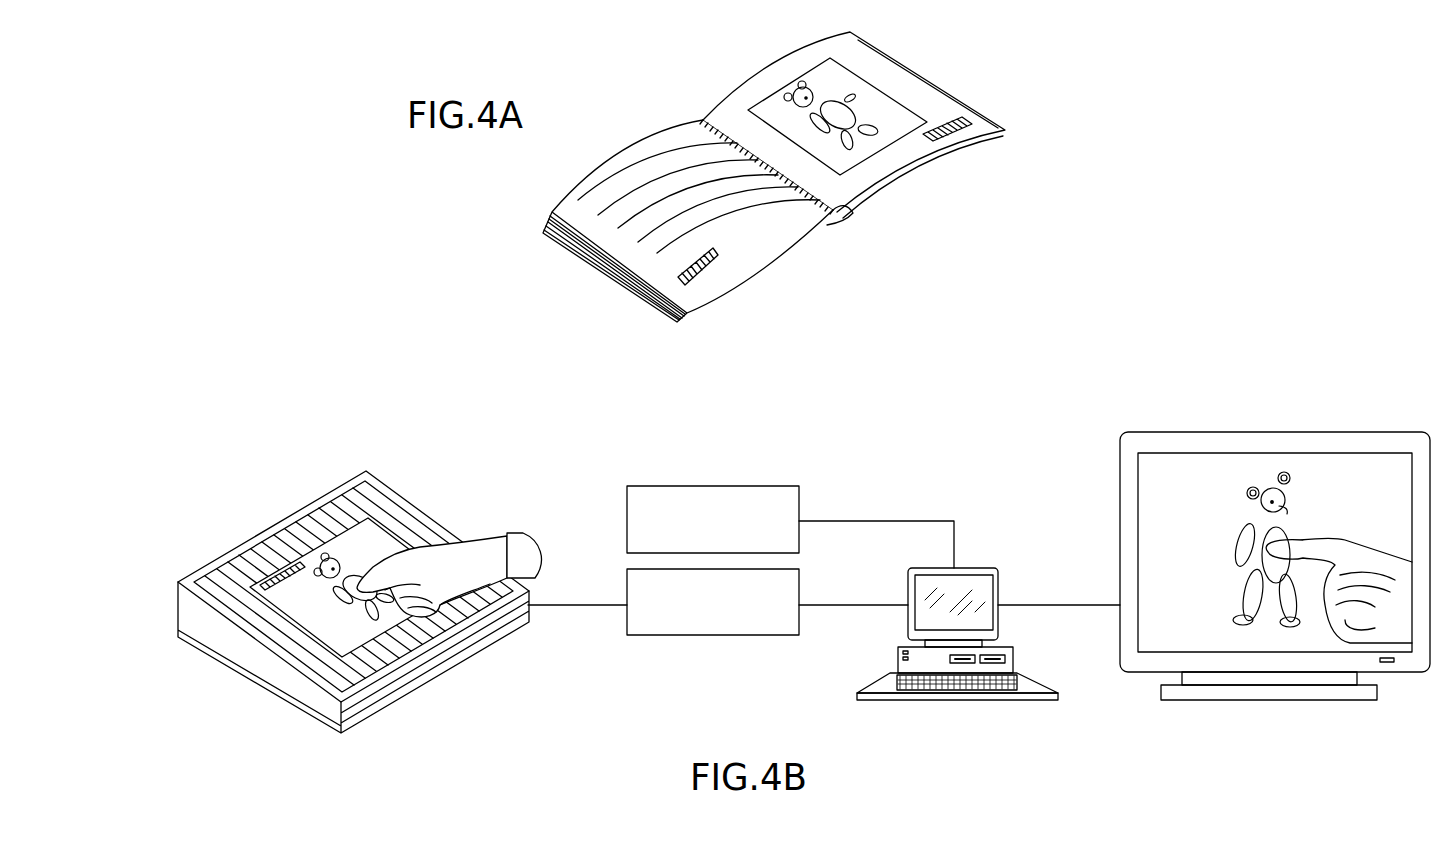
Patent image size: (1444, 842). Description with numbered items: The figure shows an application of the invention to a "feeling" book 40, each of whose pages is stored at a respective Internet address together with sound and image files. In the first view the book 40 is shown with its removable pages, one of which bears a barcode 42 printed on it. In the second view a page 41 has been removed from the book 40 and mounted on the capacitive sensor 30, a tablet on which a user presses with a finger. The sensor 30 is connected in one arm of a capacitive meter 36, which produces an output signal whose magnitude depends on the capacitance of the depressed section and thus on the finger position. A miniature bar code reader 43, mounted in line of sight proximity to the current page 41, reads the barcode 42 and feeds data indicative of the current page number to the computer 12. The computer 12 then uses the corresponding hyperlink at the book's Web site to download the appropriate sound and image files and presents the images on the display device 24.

In FIG. 4A, the feeling book 40 is at (787, 177).
In FIG. 4A, the page 41 is at (767, 78).
In FIG. 4B, the page 41 is at (272, 553).
In FIG. 4A, the barcode 42 is at (958, 135).
In FIG. 4B, the barcode 42 is at (267, 578).
In FIG. 4B, the capacitive sensor 30 is at (350, 607).
In FIG. 4B, the miniature bar code reader 43 is at (690, 487).
In FIG. 4B, the capacitive meter 36 is at (692, 635).
In FIG. 4B, the computer 12 is at (983, 565).
In FIG. 4B, the display device 24 is at (1245, 432).